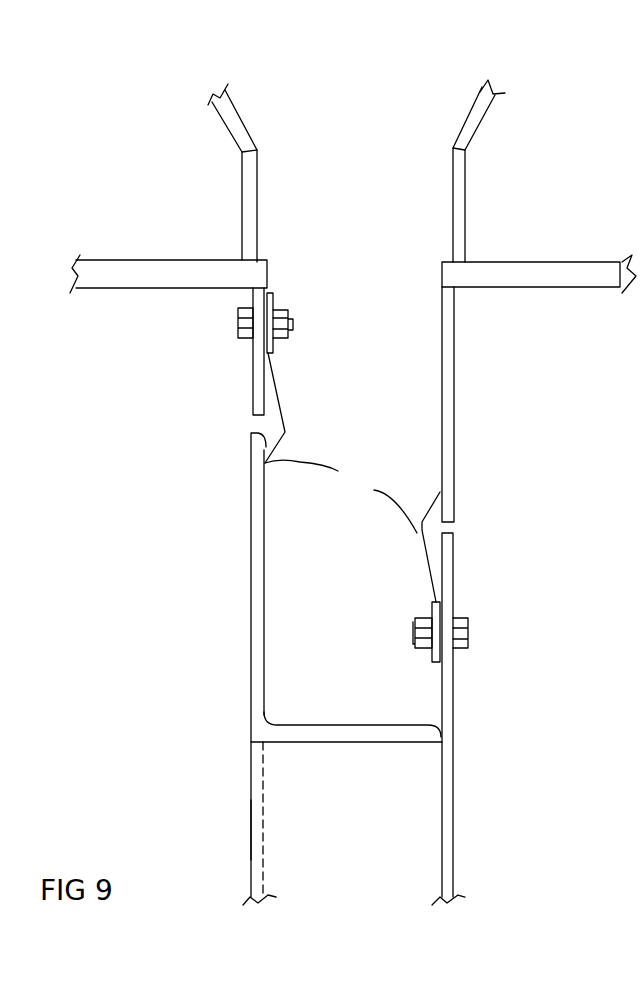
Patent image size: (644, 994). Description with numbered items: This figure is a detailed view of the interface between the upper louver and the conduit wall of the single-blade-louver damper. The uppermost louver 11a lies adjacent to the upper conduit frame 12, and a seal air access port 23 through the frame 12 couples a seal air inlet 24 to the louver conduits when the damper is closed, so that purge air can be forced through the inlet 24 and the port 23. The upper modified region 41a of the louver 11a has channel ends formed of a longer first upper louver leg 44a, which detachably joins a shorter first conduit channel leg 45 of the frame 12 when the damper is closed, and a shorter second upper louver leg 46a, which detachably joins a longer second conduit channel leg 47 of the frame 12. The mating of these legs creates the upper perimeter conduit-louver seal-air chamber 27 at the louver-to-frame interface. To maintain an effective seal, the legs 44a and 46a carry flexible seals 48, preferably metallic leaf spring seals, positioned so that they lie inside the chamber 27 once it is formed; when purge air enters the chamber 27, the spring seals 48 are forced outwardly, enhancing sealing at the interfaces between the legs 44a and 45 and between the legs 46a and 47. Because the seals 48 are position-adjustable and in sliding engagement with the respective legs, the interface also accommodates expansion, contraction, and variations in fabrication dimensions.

The louver 11a is at (238, 830).
The upper conduit frame 12 is at (163, 260).
The seal air access port 23 is at (367, 233).
The seal air inlet 24 is at (246, 128).
The upper perimeter conduit-louver seal-air chamber 27 is at (367, 421).
The upper modified region 41a is at (228, 570).
The first upper louver leg 44a is at (250, 496).
The first conduit channel leg 45 is at (252, 377).
The second upper louver leg 46a is at (455, 703).
The second conduit channel leg 47 is at (455, 347).
The flexible seals 48 is at (352, 477).